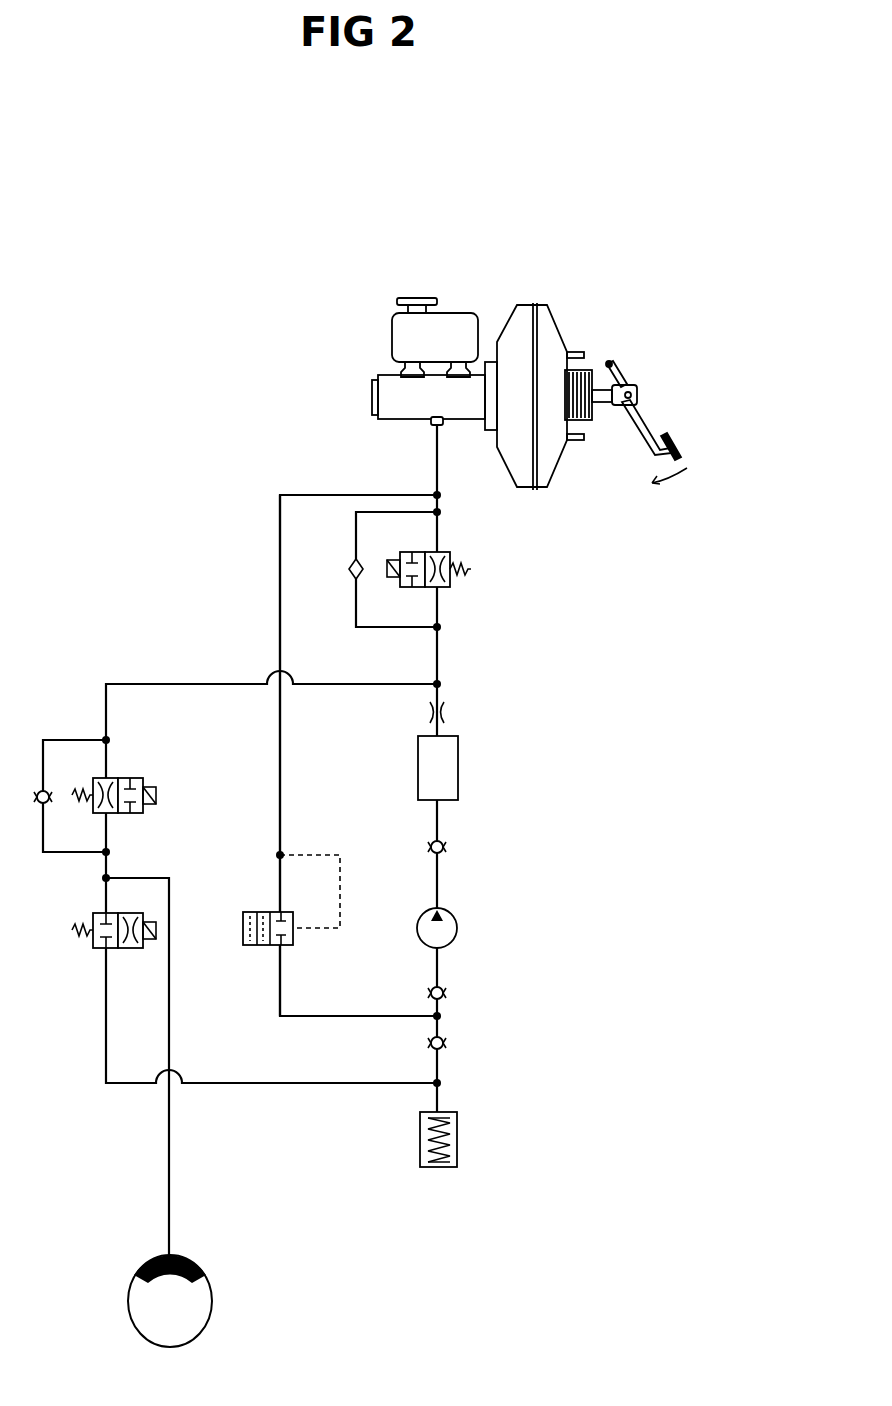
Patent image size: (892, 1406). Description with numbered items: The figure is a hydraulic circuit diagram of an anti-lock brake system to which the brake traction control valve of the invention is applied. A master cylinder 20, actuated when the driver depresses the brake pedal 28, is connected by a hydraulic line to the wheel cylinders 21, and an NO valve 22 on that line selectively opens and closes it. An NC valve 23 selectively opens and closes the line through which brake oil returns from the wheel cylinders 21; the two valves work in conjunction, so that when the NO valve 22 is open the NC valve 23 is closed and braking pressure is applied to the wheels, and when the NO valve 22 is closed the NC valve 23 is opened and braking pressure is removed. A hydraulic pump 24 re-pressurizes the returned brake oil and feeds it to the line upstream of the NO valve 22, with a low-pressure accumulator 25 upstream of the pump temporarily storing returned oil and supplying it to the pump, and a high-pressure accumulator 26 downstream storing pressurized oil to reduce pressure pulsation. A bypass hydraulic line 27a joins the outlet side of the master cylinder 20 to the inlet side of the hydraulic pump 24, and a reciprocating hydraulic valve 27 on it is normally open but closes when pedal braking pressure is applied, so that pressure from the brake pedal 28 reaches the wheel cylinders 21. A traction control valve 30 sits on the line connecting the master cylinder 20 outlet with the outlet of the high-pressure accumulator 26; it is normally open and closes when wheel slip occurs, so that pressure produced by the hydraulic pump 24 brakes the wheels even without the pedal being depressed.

The master cylinder 20 is at (373, 413).
The wheel cylinders 21 is at (207, 1282).
The NO valve 22 is at (130, 780).
The NC valve 23 is at (142, 912).
The hydraulic pump 24 is at (457, 928).
The low-pressure accumulator 25 is at (457, 1138).
The high-pressure accumulator 26 is at (458, 768).
The reciprocating hydraulic valve 27 is at (293, 943).
The bypass hydraulic line 27a is at (281, 804).
The brake pedal 28 is at (648, 423).
The traction control valve 30 is at (418, 552).